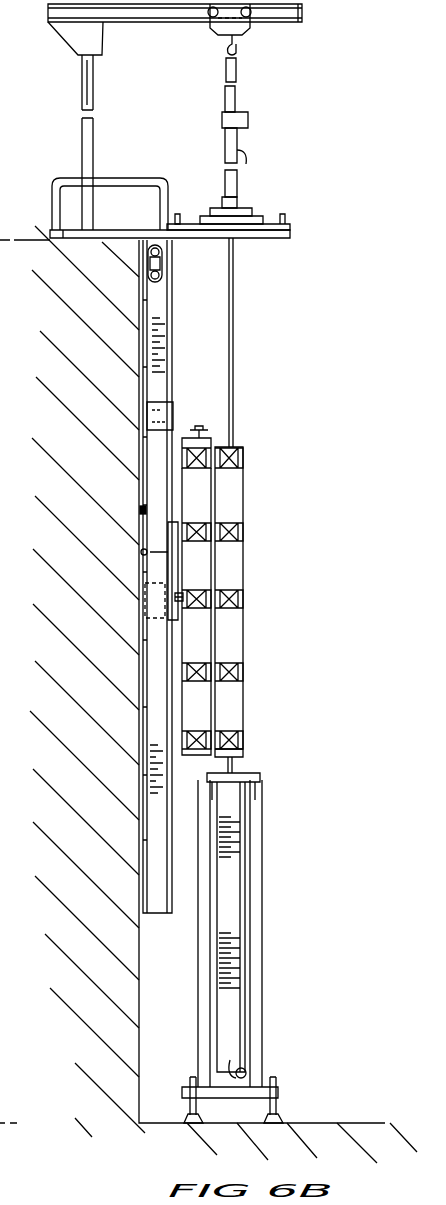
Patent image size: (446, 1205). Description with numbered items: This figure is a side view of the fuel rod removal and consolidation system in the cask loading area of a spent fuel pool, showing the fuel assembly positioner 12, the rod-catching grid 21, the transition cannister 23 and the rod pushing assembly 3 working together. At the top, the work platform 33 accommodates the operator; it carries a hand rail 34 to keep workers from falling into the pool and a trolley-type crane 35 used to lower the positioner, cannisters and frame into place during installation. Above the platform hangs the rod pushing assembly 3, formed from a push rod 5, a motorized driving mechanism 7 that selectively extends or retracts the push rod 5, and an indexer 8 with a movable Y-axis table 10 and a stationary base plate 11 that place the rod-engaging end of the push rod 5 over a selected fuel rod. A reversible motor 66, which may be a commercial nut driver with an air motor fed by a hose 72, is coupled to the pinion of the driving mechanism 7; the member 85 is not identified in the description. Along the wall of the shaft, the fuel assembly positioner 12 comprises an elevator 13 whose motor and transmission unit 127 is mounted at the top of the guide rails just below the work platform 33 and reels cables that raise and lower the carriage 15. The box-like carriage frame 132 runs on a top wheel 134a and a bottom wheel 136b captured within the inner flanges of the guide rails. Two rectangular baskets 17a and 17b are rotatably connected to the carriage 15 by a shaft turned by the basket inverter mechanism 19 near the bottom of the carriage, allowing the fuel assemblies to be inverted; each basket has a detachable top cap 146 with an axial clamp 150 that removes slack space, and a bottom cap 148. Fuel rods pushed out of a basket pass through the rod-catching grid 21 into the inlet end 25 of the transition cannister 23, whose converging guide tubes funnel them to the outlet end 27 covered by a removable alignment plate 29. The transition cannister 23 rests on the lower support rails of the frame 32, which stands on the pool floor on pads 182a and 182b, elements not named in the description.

The rod pushing assembly 3 is at (217, 120).
The push rod 5 is at (233, 355).
The motorized driving mechanism 7 is at (250, 116).
The indexer 8 is at (202, 196).
The Y-axis table 10 is at (253, 240).
The base plate 11 is at (183, 229).
The fuel assembly positioner 12 is at (136, 510).
The elevator 13 is at (155, 380).
The carriage 15 is at (158, 444).
The basket 17a is at (238, 510).
The basket 17b is at (198, 577).
The basket inverter mechanism 19 is at (197, 602).
The rod-catching grid 21 is at (240, 753).
The transition cannister 23 is at (231, 878).
The inlet end 25 is at (245, 783).
The outlet end 27 is at (233, 1066).
The alignment plate 29 is at (246, 1076).
The frame 32 is at (270, 835).
The work platform 33 is at (283, 235).
The hand rail 34 is at (147, 180).
The trolley-type crane 35 is at (247, 27).
The reversible motor 66 is at (240, 136).
The hose 72 is at (248, 161).
The block 85 is at (233, 202).
The motor and transmission unit 127 is at (162, 278).
The carriage frame 132 is at (158, 537).
The top wheel 134a is at (163, 405).
The bottom wheel 136b is at (140, 598).
The top cap 146 is at (203, 445).
The bottom cap 148 is at (197, 750).
The axial clamp 150 is at (205, 430).
The foot 182a is at (184, 1120).
The foot 182b is at (286, 1117).